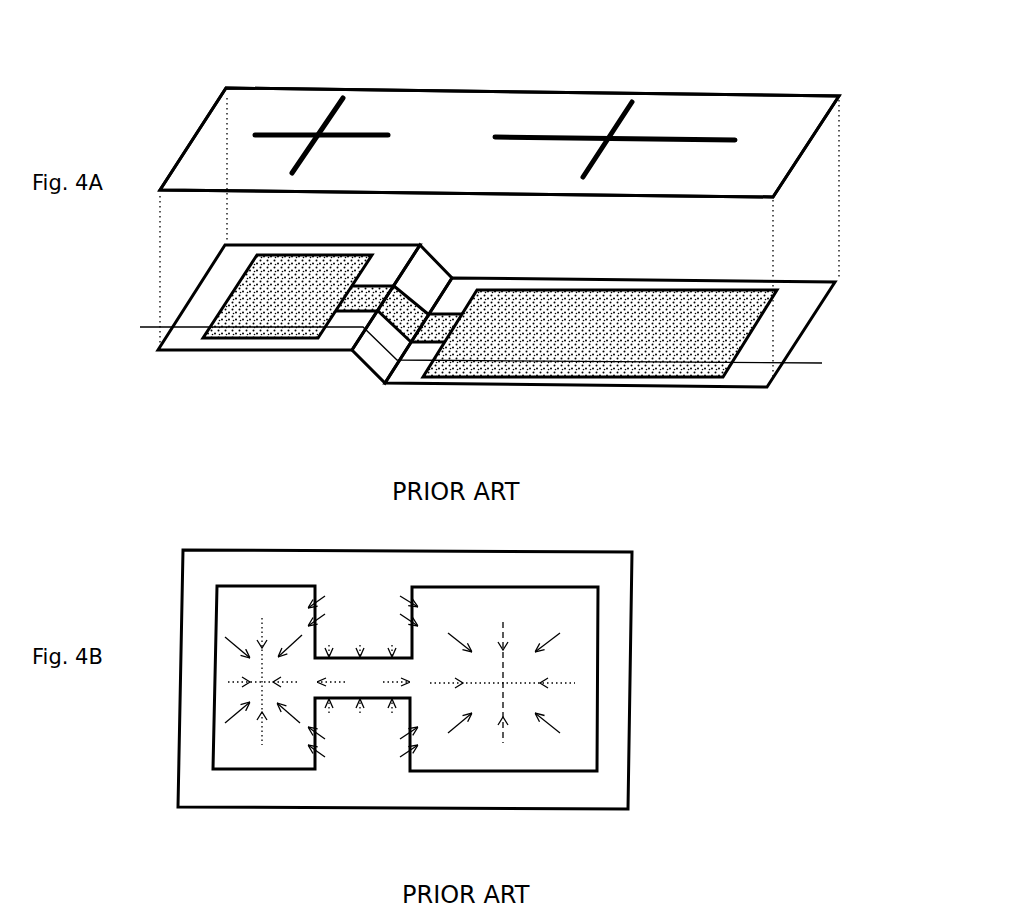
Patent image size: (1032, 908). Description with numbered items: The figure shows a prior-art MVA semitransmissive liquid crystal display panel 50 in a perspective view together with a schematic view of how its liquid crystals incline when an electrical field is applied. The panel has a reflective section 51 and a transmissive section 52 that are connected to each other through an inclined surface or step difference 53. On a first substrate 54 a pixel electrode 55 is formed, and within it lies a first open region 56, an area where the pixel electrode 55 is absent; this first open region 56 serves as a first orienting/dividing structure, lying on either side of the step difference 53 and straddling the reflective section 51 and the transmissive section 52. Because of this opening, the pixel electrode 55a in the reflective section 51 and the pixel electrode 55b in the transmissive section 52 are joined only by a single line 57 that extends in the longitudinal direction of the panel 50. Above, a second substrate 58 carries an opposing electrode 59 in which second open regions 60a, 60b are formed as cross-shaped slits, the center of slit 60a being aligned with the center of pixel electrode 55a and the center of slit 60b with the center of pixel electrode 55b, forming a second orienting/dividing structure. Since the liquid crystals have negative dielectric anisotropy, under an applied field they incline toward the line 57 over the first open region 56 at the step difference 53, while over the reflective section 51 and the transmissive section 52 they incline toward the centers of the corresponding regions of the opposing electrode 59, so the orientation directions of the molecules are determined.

The semitransmissive liquid crystal display panel 50 is at (210, 46).
The reflective section 51 is at (442, 210).
The transmissive section 52 is at (858, 248).
The step difference 53 is at (435, 218).
The first substrate 54 is at (831, 322).
The pixel electrode 55 is at (490, 365).
The pixel electrode in the reflective section 55a is at (277, 334).
The pixel electrode in the transmissive section 55b is at (440, 366).
The first open region 56 is at (433, 348).
The line 57 is at (433, 327).
The second substrate 58 is at (843, 89).
The opposing electrode 59 is at (478, 112).
The second open region 60a is at (347, 100).
The second open region 60b is at (633, 108).